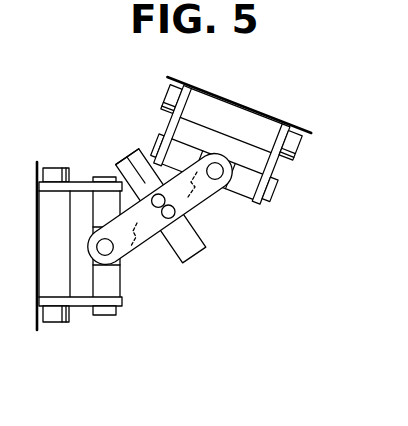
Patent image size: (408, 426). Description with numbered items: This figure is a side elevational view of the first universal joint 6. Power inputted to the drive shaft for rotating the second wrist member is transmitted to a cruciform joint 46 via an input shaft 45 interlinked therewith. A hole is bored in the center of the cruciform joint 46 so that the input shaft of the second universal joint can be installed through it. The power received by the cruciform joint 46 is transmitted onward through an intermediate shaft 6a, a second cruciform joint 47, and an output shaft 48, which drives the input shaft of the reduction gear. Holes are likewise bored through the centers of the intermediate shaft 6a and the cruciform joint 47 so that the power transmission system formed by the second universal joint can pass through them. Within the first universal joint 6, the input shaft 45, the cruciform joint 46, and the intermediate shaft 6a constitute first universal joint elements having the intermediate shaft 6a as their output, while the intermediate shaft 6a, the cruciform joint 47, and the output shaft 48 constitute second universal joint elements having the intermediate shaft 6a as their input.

The input shaft 45 is at (84, 307).
The cruciform joint 46 is at (121, 287).
The cruciform joint 47 is at (246, 202).
The output shaft 48 is at (283, 165).
The first universal joint 6 is at (198, 257).
The intermediate shaft 6a is at (128, 157).